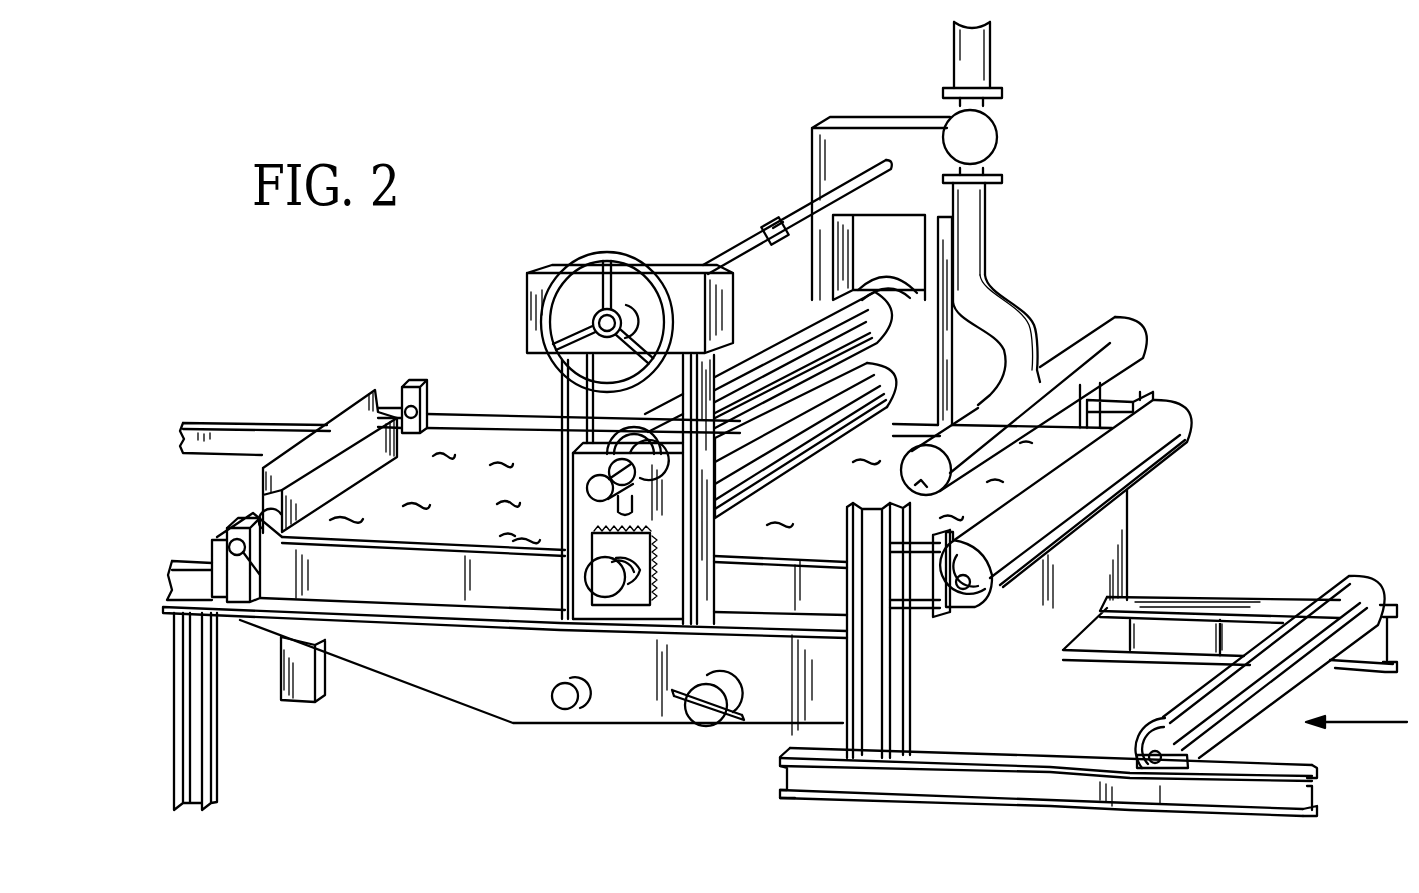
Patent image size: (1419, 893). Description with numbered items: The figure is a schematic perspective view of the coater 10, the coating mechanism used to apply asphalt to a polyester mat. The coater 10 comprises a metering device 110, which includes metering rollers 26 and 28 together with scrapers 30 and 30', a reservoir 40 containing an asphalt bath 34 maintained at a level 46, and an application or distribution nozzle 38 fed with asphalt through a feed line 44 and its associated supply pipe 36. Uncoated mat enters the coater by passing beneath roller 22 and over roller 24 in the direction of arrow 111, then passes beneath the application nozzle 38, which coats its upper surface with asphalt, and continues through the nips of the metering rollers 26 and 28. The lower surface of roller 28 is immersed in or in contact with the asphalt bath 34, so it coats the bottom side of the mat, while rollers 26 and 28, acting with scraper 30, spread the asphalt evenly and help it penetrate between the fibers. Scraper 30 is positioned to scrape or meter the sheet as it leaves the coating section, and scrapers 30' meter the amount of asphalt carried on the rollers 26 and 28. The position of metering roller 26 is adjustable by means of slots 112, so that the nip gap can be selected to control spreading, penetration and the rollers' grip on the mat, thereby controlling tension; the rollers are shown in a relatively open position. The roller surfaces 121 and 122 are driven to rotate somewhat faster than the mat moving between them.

The coater 10 is at (651, 207).
The roller 22 is at (1352, 585).
The roller 24 is at (1172, 410).
The metering roller 26 is at (820, 326).
The metering roller 28 is at (795, 475).
The scraper 30 is at (328, 439).
The scrapers 30' is at (937, 380).
The asphalt bath 34 is at (490, 457).
The supply pipe 36 is at (970, 228).
The application nozzle 38 is at (987, 402).
The reservoir 40 is at (631, 712).
The feed line 44 is at (992, 60).
The level 46 is at (431, 491).
The metering device 110 is at (764, 322).
The arrow 111 is at (1366, 726).
The slots 112 is at (872, 288).
The surface 121 is at (694, 266).
The surface 122 is at (883, 372).